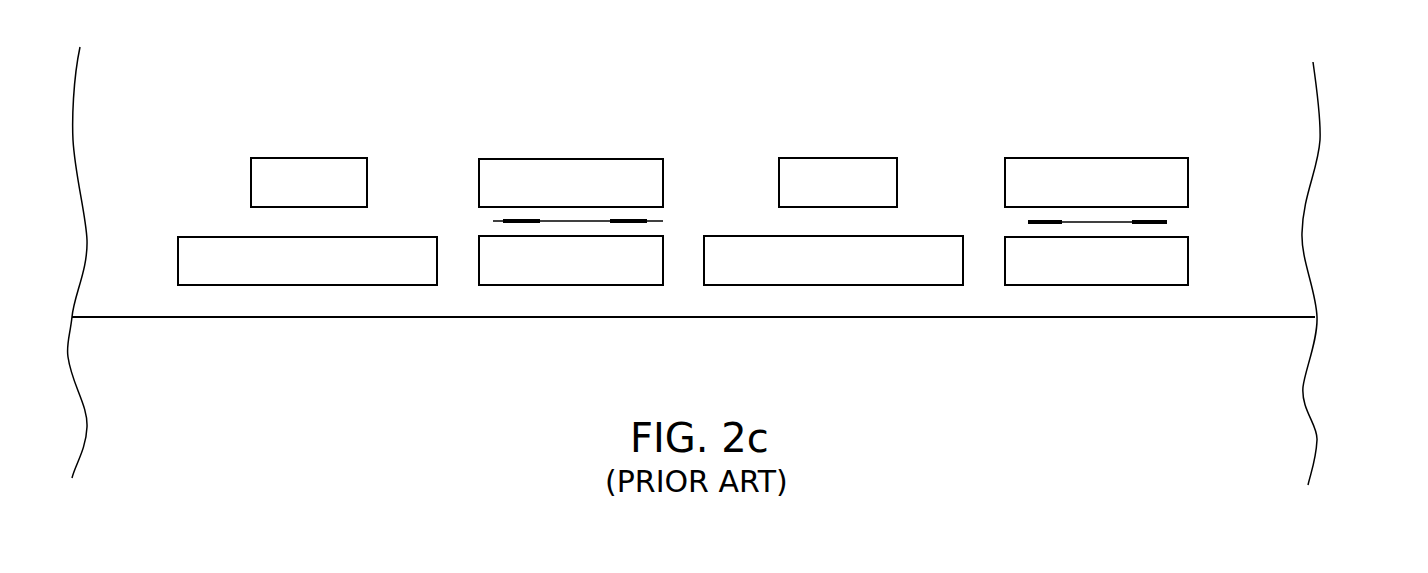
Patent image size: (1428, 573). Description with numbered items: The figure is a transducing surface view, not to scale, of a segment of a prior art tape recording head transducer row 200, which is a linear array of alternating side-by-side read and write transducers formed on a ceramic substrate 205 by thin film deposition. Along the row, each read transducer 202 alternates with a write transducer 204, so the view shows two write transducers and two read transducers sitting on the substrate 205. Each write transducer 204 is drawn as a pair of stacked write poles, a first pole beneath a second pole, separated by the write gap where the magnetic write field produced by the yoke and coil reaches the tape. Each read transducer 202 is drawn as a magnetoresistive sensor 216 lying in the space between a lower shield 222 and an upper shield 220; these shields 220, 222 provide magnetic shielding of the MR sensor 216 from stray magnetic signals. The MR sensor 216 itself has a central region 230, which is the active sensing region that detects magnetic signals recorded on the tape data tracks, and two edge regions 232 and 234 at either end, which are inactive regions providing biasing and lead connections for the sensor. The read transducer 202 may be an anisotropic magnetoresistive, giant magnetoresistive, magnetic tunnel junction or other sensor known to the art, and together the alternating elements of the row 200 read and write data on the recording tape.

The tape recording head transducer row 200 is at (1040, 393).
The read transducer 202 is at (1137, 199).
The write transducer 204 is at (836, 193).
The ceramic substrate 205 is at (1310, 357).
The magnetoresistive sensor 216 is at (1167, 222).
The upper shield 220 is at (1042, 158).
The lower shield 222 is at (1188, 263).
The central region 230 is at (557, 164).
The edge region 232 is at (493, 221).
The edge region 234 is at (647, 221).